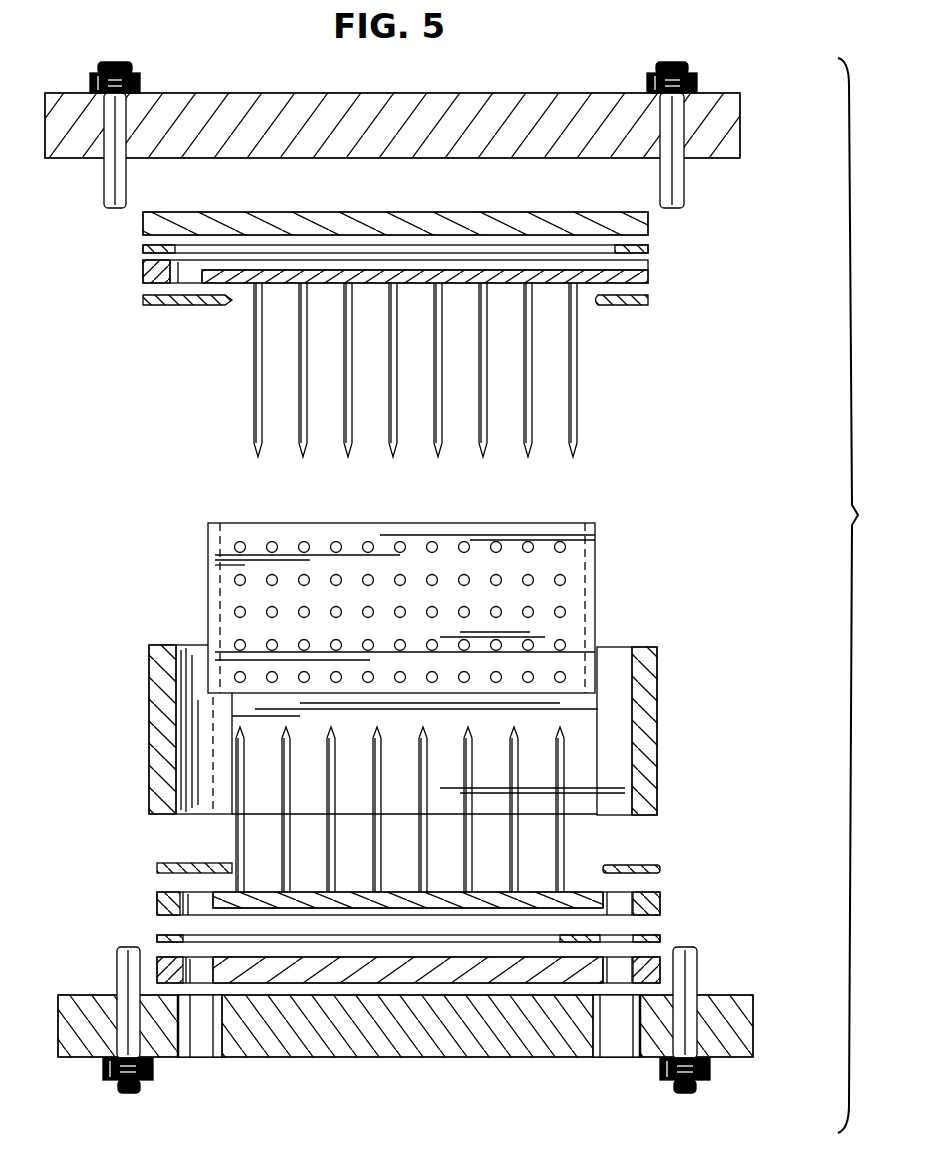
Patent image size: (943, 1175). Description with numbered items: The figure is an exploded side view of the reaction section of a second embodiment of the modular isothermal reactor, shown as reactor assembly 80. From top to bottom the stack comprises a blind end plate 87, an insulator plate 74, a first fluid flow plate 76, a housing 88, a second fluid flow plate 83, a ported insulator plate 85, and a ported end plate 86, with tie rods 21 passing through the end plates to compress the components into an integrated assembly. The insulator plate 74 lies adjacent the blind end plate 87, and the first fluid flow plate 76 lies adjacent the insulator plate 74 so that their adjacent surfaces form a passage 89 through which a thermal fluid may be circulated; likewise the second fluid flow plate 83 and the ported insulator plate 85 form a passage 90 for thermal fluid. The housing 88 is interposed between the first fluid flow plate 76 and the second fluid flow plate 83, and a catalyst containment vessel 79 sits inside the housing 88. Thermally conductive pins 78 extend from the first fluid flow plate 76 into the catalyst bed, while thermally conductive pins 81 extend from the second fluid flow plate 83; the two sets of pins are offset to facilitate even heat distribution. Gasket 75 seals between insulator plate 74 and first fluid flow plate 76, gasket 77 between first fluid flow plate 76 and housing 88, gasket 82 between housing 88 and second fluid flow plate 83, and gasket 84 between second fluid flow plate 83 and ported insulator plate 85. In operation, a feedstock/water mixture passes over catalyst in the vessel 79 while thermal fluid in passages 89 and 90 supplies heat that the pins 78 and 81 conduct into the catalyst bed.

The tie rod 21 is at (684, 66).
The insulator plate 74 is at (648, 232).
The gasket 75 is at (648, 250).
The first fluid flow plate 76 is at (396, 274).
The gasket 77 is at (648, 300).
The thermally conductive pins 78 is at (577, 405).
The catalyst containment vessel 79 is at (596, 572).
The reactor assembly 80 is at (708, 543).
The thermally conductive pins 81 is at (563, 822).
The gasket 82 is at (660, 868).
The second fluid flow plate 83 is at (419, 902).
The gasket 84 is at (660, 936).
The ported insulator plate 85 is at (660, 971).
The ported end plate 86 is at (753, 1025).
The blind end plate 87 is at (735, 160).
The housing 88 is at (657, 752).
The passage 89 is at (212, 268).
The passage 90 is at (225, 912).